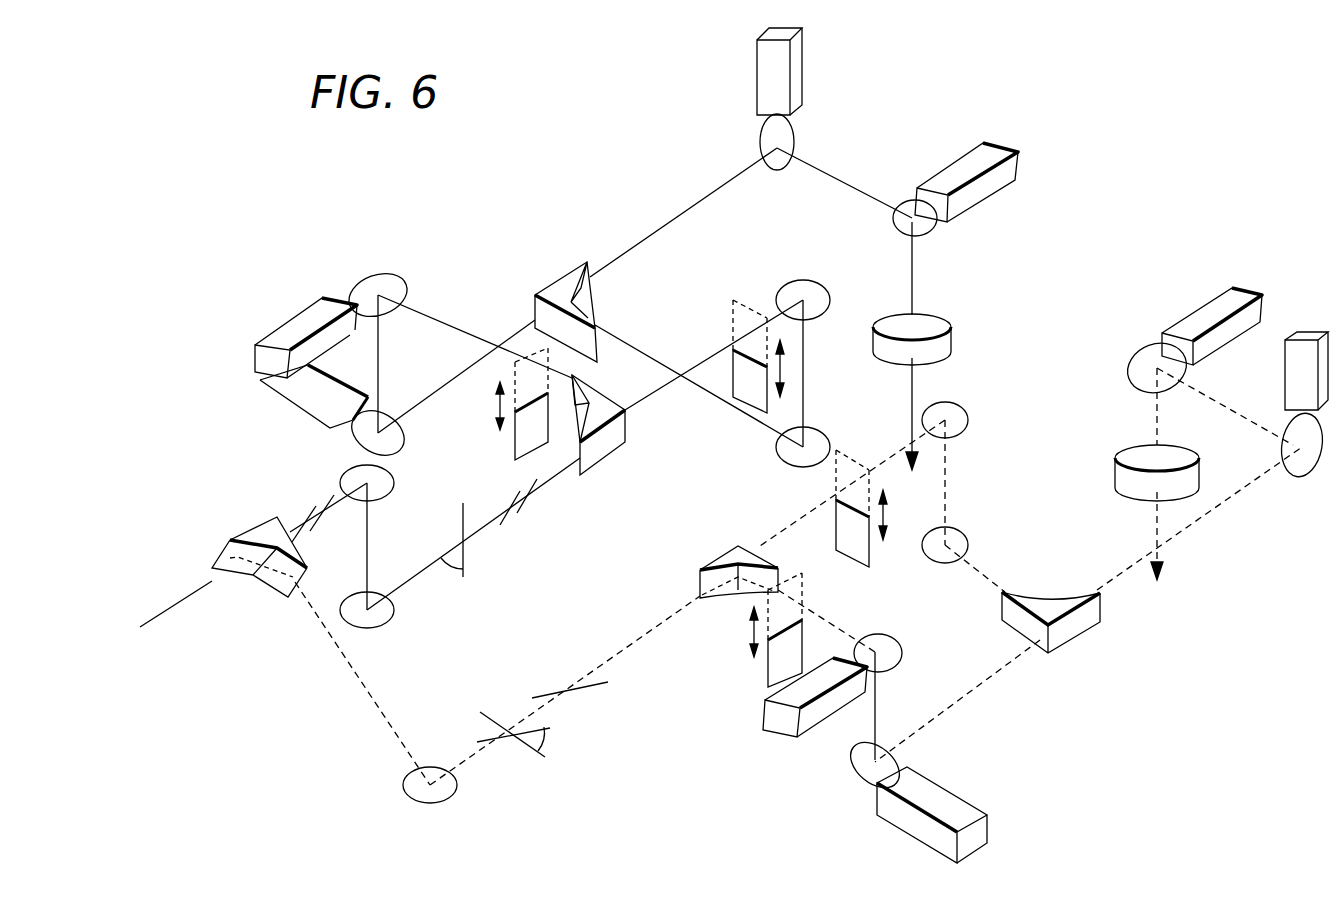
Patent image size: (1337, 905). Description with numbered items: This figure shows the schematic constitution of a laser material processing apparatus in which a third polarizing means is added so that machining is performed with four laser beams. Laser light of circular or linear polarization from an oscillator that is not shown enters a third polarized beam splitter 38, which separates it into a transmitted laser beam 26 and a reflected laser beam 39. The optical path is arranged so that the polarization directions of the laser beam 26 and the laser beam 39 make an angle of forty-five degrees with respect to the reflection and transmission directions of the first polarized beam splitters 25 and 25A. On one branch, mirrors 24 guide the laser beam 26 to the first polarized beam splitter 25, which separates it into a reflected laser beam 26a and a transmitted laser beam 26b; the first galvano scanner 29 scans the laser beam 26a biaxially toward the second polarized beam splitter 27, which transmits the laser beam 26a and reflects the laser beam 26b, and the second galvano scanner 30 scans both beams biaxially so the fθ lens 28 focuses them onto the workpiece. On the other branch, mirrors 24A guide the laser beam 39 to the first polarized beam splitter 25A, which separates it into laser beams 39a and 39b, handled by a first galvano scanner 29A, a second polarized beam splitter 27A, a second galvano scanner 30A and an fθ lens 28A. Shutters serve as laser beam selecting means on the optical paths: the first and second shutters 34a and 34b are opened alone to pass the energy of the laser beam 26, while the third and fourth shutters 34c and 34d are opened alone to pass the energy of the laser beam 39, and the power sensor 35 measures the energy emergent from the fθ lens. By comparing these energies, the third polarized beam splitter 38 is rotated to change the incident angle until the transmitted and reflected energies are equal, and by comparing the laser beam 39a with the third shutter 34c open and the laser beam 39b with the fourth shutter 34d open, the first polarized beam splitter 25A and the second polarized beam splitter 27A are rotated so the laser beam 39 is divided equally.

The mirrors 24 is at (800, 285).
The mirrors 24A is at (960, 532).
The first polarized beam splitter 25 is at (600, 470).
The first polarized beam splitter 25A is at (712, 556).
The laser beam 26 is at (540, 492).
The laser beam 26a is at (466, 332).
The laser beam 26b is at (640, 408).
The second polarized beam splitter 27 is at (575, 278).
The second polarized beam splitter 27A is at (1075, 642).
The fθ lens 28 is at (897, 318).
The fθ lens 28A is at (1140, 452).
The first galvano scanner 29 is at (262, 360).
The first galvano scanner 29A is at (783, 740).
The second galvano scanner 30 is at (803, 62).
The second galvano scanner 30A is at (1310, 332).
The first shutter 34a is at (522, 440).
The second shutter 34b is at (732, 312).
The third shutter 34c is at (765, 662).
The fourth shutter 34d is at (872, 555).
The power sensor 35 is at (458, 786).
The third polarized beam splitter 38 is at (265, 522).
The laser beam 39 is at (620, 658).
The laser beam 39a is at (823, 625).
The laser beam 39b is at (790, 523).